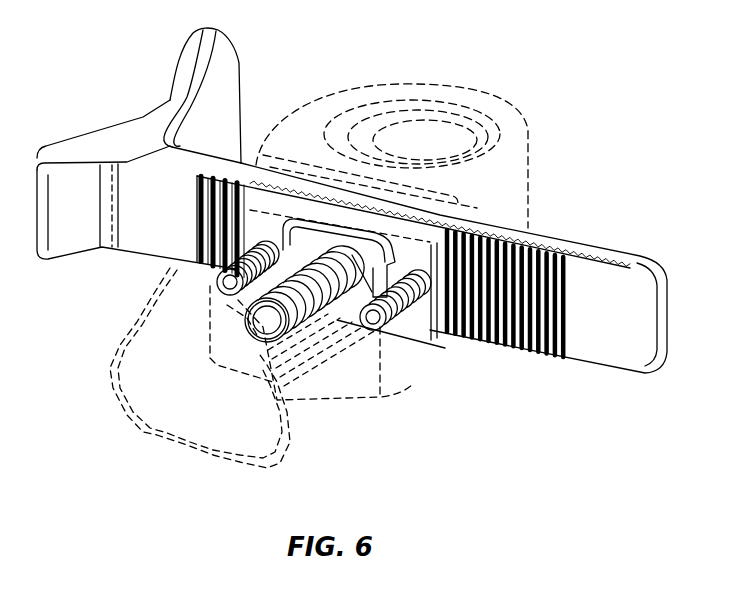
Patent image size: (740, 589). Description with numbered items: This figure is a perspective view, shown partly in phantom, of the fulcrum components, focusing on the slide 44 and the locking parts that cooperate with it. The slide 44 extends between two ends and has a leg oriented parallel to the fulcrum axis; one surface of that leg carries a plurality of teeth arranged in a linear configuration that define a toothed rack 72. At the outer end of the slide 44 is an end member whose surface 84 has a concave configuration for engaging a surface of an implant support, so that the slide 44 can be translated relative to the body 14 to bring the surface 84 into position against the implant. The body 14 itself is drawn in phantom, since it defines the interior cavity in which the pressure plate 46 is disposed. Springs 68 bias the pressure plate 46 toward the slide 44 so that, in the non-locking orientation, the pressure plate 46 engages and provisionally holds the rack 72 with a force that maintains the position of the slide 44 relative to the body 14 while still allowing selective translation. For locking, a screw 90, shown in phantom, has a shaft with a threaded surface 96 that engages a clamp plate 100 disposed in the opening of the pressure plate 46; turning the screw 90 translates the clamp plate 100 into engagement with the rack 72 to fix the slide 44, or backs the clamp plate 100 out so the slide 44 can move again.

The body 14 is at (520, 90).
The slide 44 is at (562, 200).
The pressure plate 46 is at (413, 250).
The springs 68 is at (212, 283).
The toothed rack 72 is at (533, 268).
The surface 84 is at (183, 80).
The screw 90 is at (183, 445).
The threaded surface 96 is at (327, 317).
The clamp plate 100 is at (378, 325).